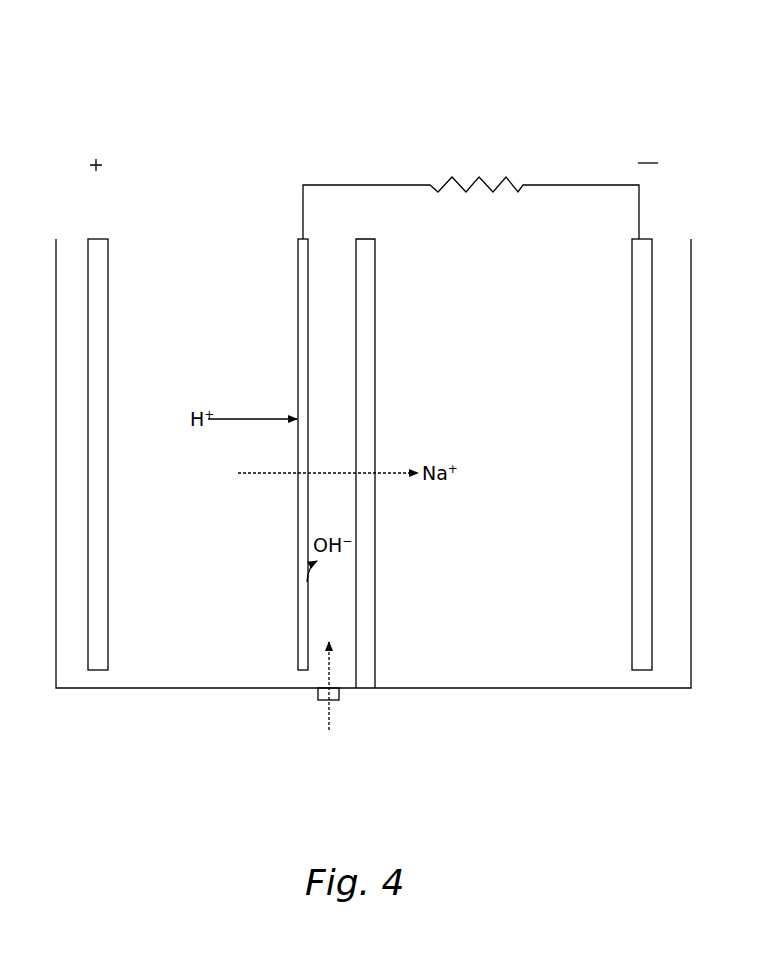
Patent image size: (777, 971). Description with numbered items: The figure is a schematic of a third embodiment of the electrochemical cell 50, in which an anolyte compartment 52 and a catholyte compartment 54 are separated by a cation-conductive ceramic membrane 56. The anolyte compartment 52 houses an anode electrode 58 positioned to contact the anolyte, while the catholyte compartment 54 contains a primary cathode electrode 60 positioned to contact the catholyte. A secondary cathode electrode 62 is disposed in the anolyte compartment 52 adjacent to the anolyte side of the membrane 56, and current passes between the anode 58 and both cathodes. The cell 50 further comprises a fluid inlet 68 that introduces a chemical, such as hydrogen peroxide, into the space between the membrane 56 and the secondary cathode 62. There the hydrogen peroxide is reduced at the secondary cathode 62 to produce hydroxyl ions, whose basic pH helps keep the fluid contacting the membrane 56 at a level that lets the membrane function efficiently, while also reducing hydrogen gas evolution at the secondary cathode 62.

The electrochemical cell 50 is at (203, 78).
The anolyte compartment 52 is at (188, 534).
The catholyte compartment 54 is at (543, 533).
The cation-conductive ceramic membrane 56 is at (365, 338).
The anode electrode 58 is at (98, 400).
The primary cathode electrode 60 is at (642, 398).
The secondary cathode electrode 62 is at (296, 265).
The fluid inlet 68 is at (339, 698).